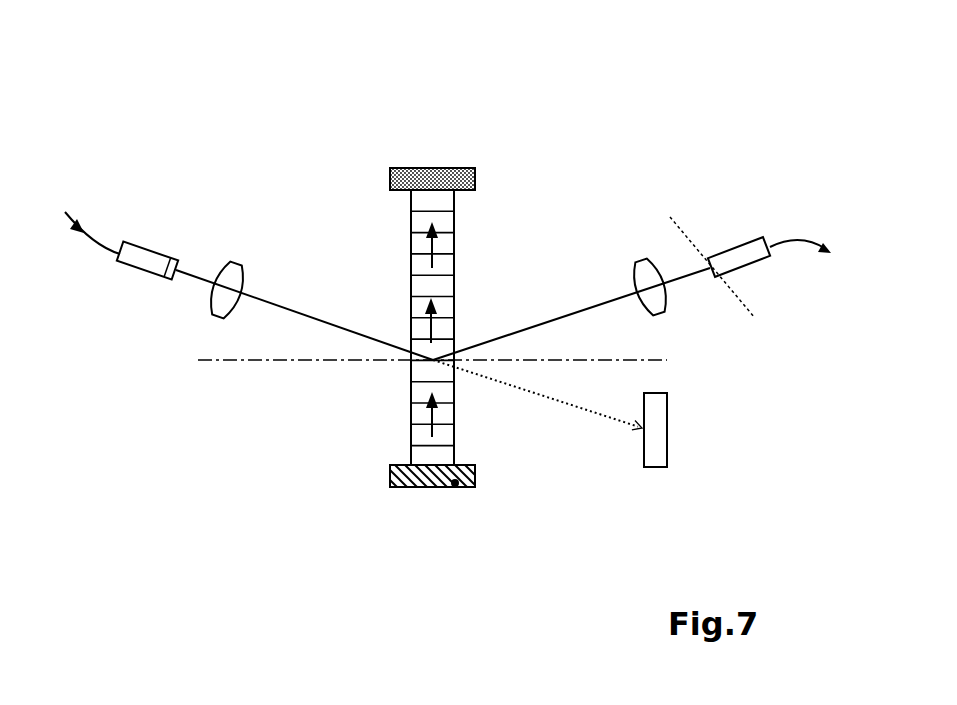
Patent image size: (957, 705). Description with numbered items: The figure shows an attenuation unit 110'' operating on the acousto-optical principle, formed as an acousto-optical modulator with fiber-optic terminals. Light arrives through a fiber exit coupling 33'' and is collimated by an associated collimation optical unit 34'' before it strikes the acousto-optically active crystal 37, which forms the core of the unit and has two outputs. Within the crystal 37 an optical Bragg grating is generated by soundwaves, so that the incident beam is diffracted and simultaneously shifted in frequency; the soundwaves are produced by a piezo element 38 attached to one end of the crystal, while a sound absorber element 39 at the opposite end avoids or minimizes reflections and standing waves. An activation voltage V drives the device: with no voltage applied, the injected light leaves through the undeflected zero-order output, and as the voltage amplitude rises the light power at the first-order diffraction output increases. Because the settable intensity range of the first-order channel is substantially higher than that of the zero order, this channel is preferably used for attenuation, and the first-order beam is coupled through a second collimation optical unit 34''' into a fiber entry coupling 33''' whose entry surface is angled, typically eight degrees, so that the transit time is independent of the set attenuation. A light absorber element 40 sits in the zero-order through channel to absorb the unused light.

The attenuation unit 110'' is at (365, 182).
The acousto-optically active crystal 37 is at (420, 238).
The sound absorber element 39 is at (452, 175).
The piezo element 38 is at (410, 486).
The applied voltage V is at (456, 486).
The fiber exit coupling 33'' is at (107, 288).
The collimation optical unit 34'' is at (161, 344).
The collimation optical unit 34''' is at (725, 190).
The fiber entry coupling 33''' is at (775, 221).
The light absorber element 40 is at (657, 443).